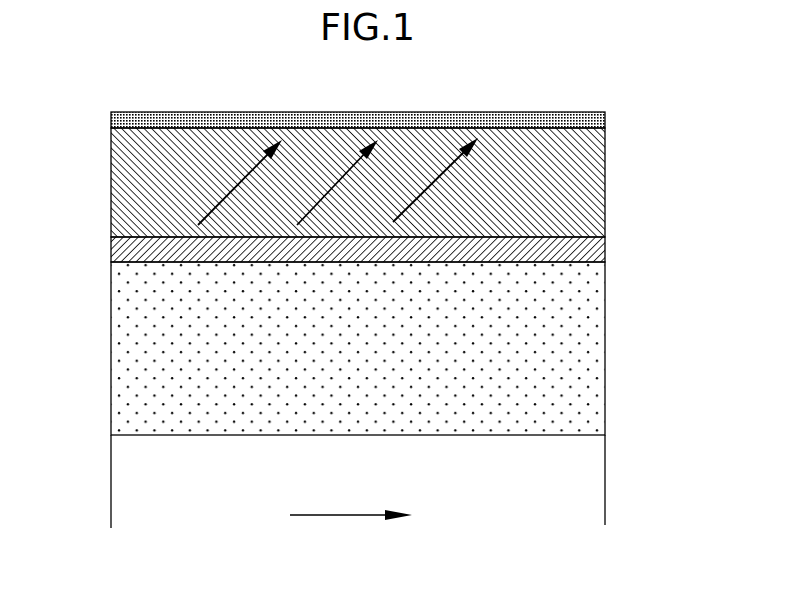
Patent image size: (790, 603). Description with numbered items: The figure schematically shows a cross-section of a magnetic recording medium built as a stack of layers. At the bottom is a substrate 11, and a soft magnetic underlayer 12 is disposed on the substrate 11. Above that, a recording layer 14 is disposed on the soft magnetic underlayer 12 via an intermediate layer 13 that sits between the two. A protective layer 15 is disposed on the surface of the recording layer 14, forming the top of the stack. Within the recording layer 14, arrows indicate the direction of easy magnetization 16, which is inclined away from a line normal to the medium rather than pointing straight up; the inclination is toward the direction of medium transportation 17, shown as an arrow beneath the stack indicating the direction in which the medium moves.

The substrate 11 is at (580, 475).
The soft magnetic underlayer 12 is at (582, 352).
The intermediate layer 13 is at (597, 242).
The recording layer 14 is at (580, 183).
The protective layer 15 is at (597, 110).
The direction of easy magnetization 16 is at (230, 180).
The direction of medium transportation 17 is at (330, 517).